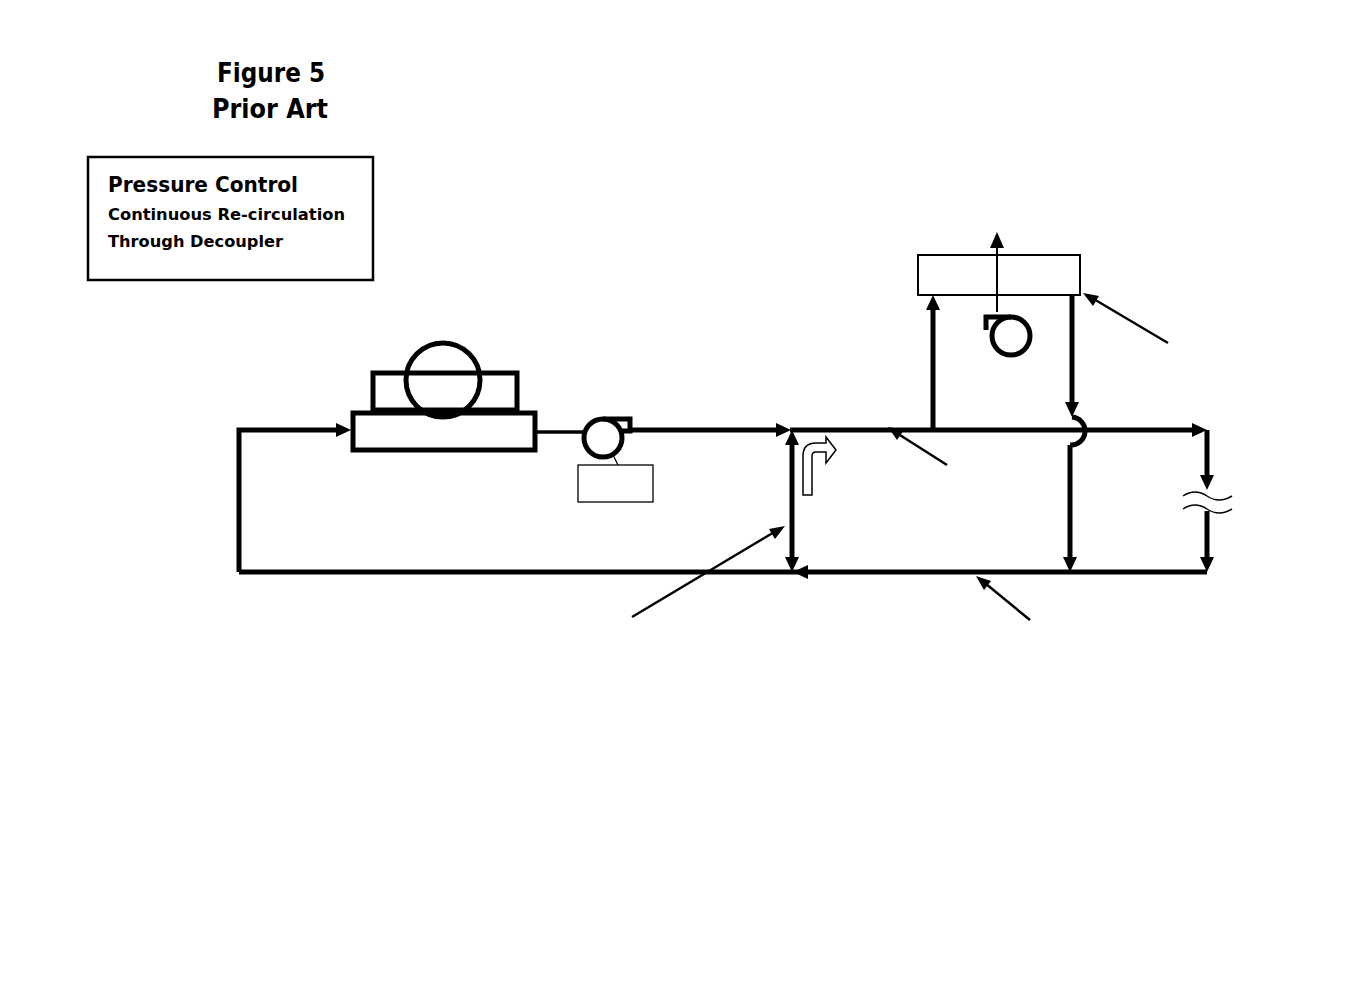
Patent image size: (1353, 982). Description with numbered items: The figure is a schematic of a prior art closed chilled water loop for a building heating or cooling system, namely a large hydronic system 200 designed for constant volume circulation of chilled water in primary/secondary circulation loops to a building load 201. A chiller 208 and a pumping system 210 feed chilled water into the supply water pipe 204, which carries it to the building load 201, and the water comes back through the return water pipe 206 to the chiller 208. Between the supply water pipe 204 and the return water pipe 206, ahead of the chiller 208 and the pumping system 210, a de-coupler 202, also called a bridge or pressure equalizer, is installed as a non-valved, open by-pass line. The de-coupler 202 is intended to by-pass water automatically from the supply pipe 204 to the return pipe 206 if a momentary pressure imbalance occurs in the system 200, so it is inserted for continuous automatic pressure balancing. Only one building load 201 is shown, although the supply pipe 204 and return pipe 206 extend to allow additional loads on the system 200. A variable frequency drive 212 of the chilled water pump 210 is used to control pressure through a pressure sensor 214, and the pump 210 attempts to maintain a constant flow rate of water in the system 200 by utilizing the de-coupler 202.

The large hydronic system 200 is at (1213, 386).
The building load 201 is at (1005, 257).
The de-coupler 202 is at (788, 495).
The supply water pipe 204 is at (803, 427).
The return water pipe 206 is at (850, 568).
The chiller 208 is at (490, 372).
The pumping system 210 is at (605, 427).
The variable frequency drive 212 is at (591, 478).
The pressure sensor 214 is at (677, 425).